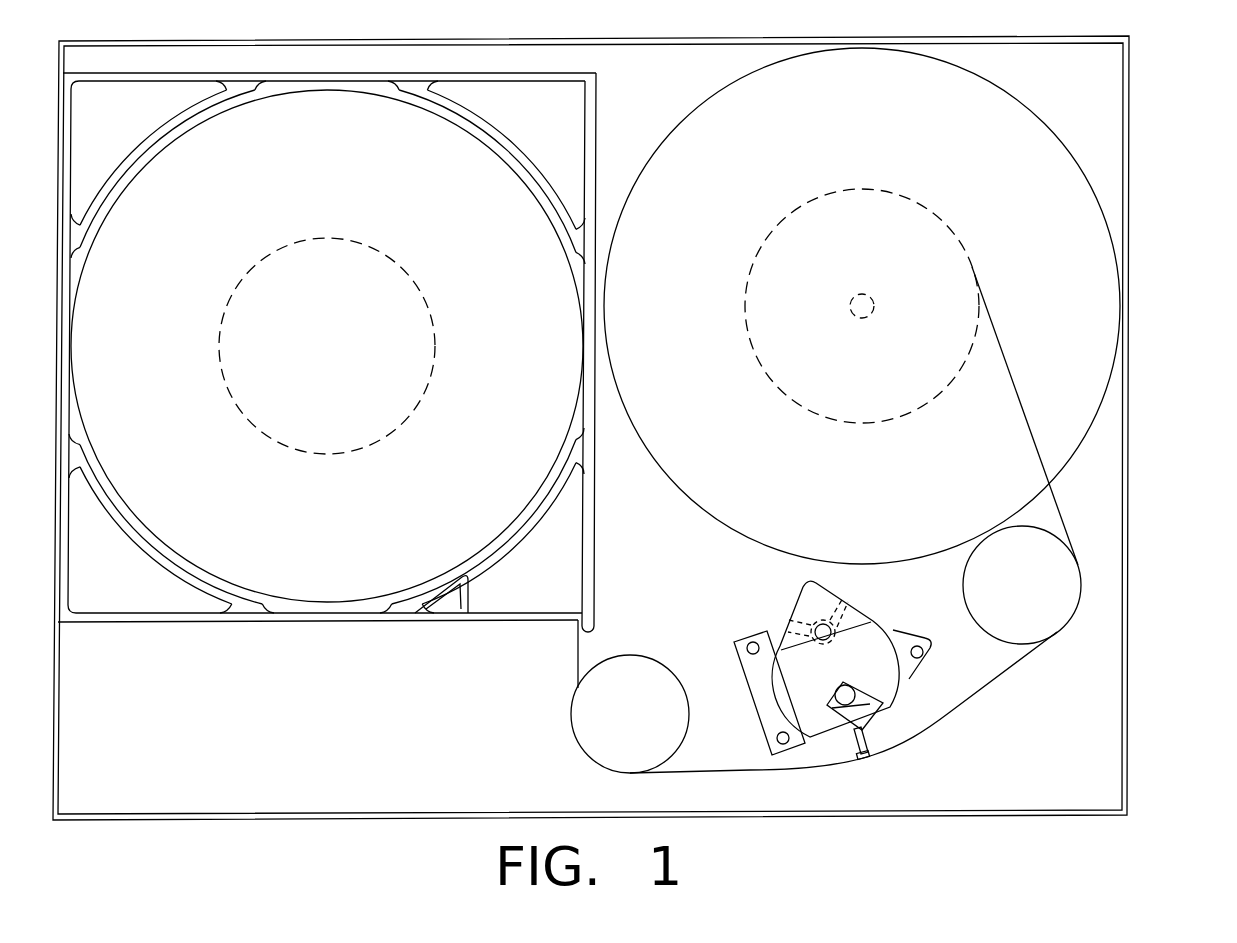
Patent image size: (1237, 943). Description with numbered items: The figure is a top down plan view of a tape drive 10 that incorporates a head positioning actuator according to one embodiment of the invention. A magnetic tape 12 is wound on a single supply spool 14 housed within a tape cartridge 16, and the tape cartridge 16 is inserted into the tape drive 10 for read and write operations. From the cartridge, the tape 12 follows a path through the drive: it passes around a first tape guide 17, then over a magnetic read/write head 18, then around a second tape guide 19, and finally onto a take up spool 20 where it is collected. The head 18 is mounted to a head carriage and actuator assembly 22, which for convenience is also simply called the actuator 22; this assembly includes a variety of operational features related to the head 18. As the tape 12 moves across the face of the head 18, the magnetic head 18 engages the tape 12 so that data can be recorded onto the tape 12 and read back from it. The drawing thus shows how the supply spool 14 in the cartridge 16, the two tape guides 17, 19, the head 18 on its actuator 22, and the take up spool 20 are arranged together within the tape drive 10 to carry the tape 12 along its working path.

The tape drive 10 is at (1160, 62).
The magnetic tape 12 is at (986, 683).
The supply spool 14 is at (472, 147).
The tape cartridge 16 is at (588, 90).
The tape guide 17 is at (578, 731).
The magnetic read/write head 18 is at (862, 757).
The tape guide 19 is at (1064, 617).
The take up spool 20 is at (1070, 173).
The head carriage and actuator assembly 22 is at (718, 690).